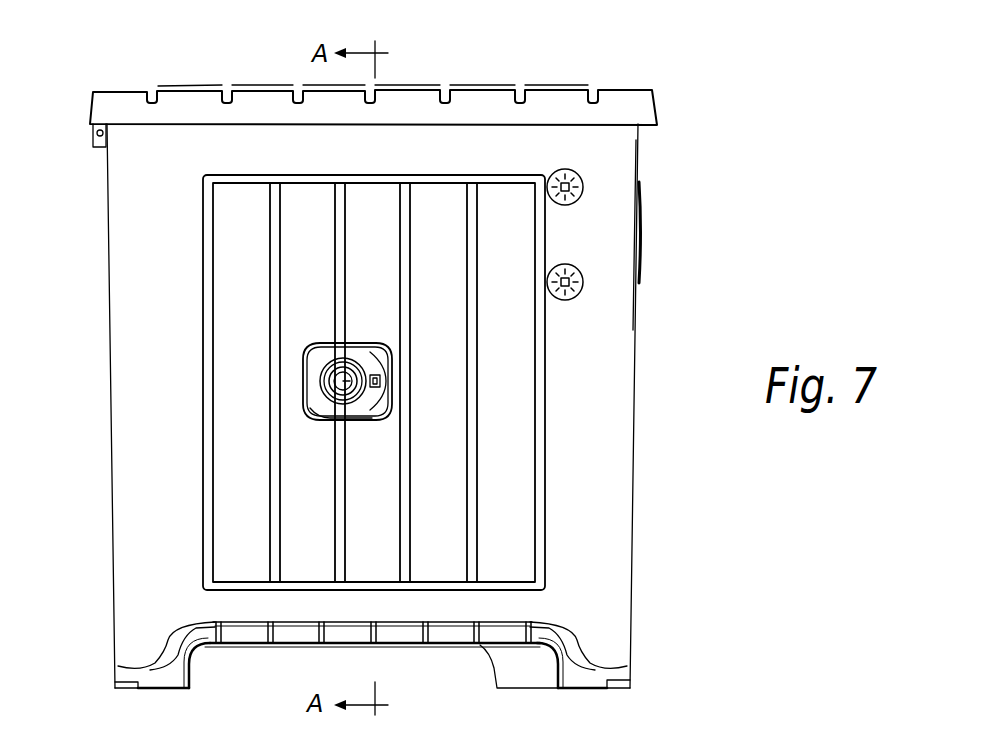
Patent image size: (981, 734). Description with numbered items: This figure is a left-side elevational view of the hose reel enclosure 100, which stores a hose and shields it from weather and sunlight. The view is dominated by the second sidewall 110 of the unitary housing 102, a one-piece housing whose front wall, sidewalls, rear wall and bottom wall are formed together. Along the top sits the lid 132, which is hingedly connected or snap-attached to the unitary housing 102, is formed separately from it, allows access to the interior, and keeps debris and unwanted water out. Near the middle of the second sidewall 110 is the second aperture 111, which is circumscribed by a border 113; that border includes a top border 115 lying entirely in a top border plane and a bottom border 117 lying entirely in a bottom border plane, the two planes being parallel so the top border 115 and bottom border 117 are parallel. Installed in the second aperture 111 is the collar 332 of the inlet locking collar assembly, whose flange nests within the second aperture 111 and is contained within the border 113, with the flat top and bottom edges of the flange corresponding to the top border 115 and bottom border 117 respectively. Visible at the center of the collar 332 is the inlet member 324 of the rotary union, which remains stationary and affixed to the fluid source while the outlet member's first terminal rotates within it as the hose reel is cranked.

The hose reel enclosure 100 is at (695, 151).
The unitary housing 102 is at (602, 438).
The second sidewall 110 is at (612, 321).
The second aperture 111 is at (385, 356).
The border 113 is at (382, 381).
The top border 115 is at (332, 348).
The bottom border 117 is at (330, 420).
The lid 132 is at (198, 103).
The inlet member 324 is at (338, 381).
The collar 332 is at (318, 348).